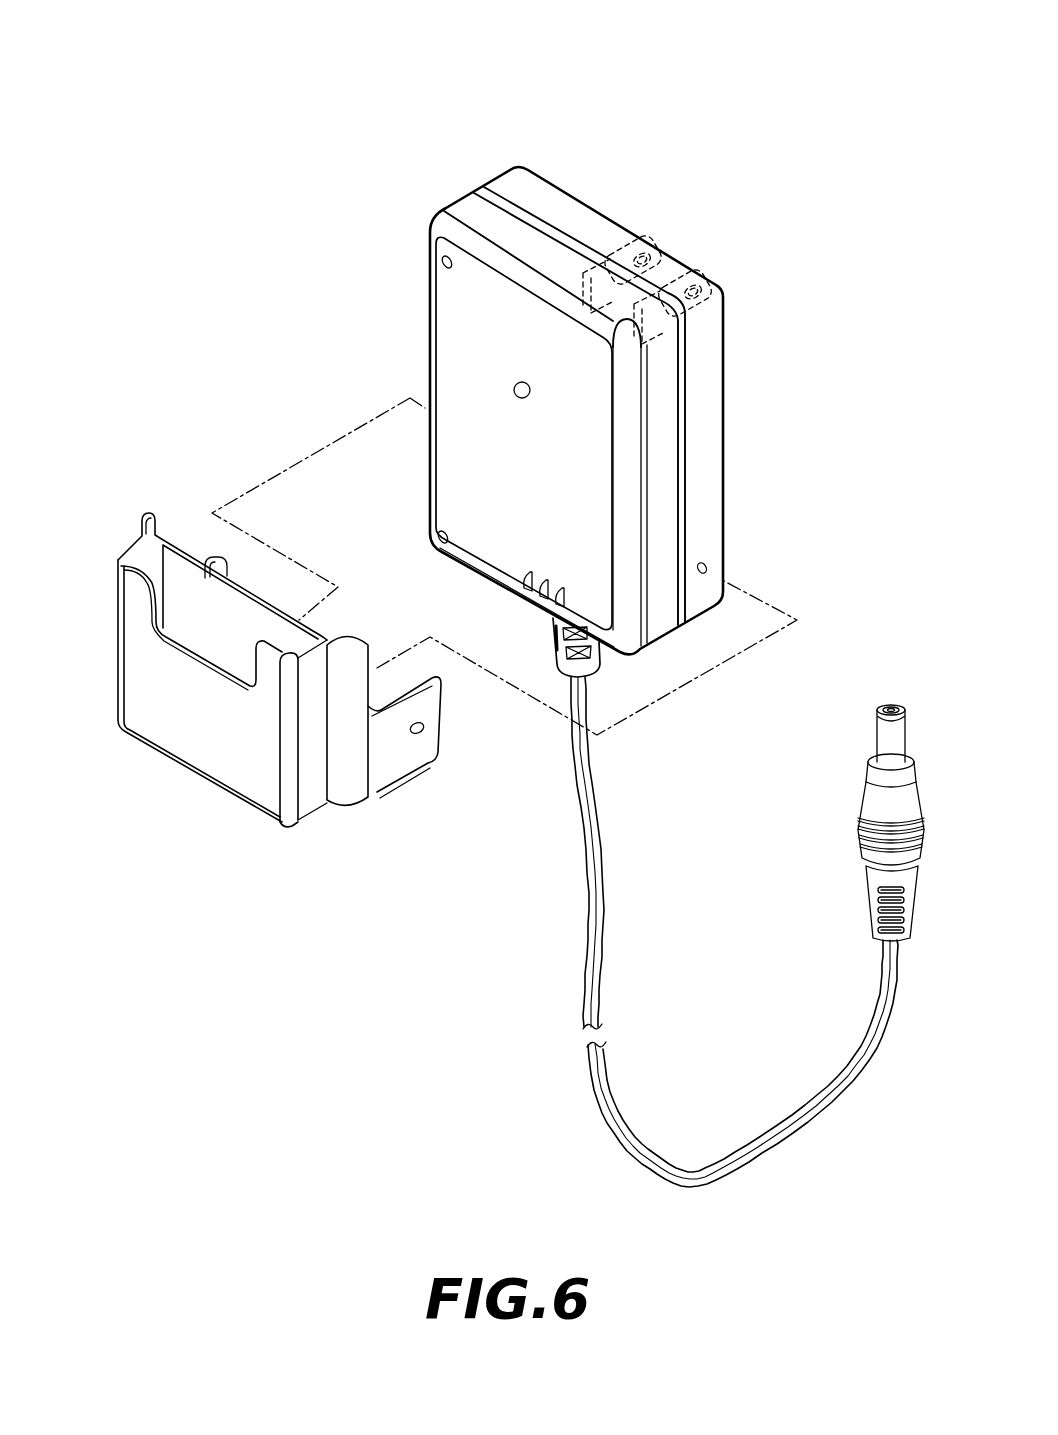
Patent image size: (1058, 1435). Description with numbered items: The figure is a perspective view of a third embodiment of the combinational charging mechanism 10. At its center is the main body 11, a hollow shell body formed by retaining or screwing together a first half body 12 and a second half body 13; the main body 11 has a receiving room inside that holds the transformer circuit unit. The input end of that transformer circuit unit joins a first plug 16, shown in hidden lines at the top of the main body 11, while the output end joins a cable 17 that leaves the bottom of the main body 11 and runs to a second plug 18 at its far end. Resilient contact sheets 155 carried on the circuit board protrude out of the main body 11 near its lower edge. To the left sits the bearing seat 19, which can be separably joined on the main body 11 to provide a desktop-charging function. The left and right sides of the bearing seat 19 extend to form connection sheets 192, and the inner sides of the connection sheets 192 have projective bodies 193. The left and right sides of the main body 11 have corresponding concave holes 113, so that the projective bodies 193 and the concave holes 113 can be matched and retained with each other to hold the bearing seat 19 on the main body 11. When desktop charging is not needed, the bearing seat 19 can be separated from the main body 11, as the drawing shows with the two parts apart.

The combinational charging mechanism 10 is at (557, 104).
The main body 11 is at (473, 168).
The first half body 12 is at (445, 340).
The second half body 13 is at (526, 185).
The first plug 16 is at (718, 300).
The cable 17 is at (818, 1116).
The second plug 18 is at (861, 851).
The bearing seat 19 is at (133, 663).
The concave holes 113 is at (708, 567).
The resilient contact sheets 155 is at (532, 586).
The connection sheets 192 is at (440, 748).
The projective bodies 193 is at (414, 736).